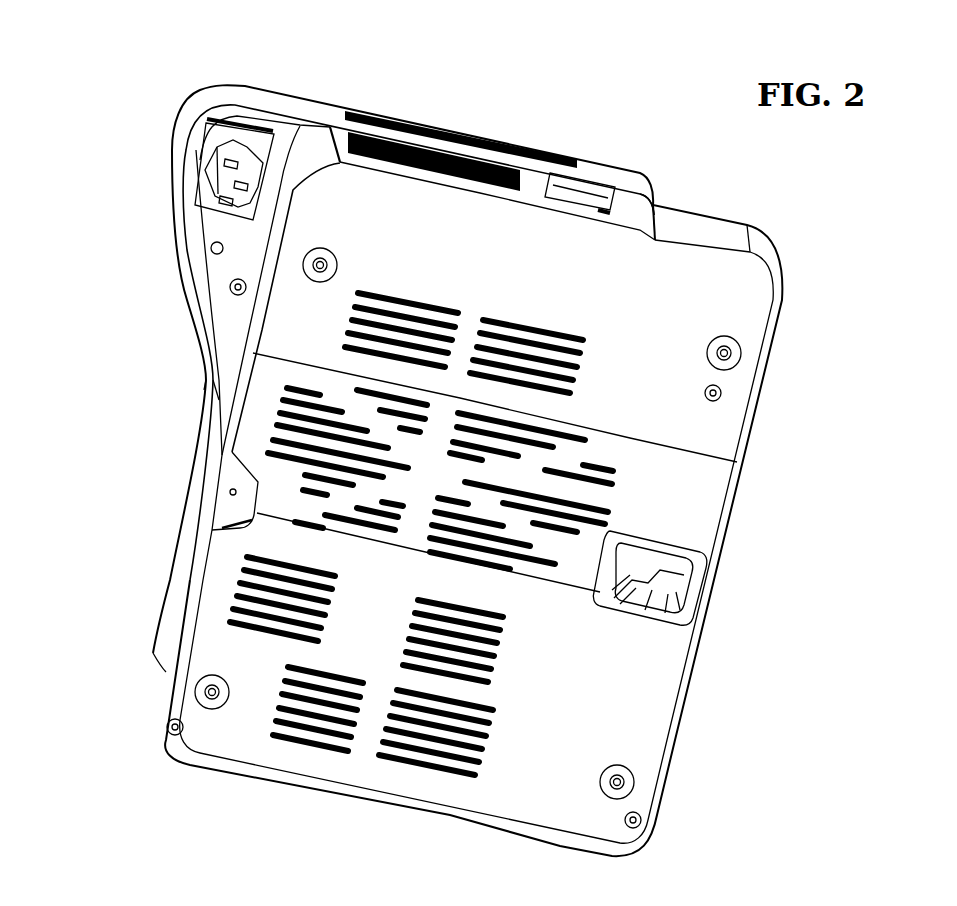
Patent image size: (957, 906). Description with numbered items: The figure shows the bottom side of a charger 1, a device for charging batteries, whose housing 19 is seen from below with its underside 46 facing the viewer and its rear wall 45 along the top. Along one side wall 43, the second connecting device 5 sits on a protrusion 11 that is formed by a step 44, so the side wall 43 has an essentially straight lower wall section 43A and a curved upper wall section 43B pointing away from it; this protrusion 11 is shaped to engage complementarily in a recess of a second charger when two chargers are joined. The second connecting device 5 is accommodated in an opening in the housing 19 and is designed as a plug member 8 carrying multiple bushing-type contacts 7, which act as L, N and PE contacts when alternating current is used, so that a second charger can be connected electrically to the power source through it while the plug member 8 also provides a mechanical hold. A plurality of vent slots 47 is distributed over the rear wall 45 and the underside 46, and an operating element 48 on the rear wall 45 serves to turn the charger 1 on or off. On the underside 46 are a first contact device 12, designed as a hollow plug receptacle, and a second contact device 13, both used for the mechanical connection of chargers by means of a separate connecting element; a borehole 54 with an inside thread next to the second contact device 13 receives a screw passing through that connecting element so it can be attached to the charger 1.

The charger 1 is at (484, 118).
The second connecting device 5 is at (204, 163).
The bushing-type contacts 7 is at (222, 201).
The plug member 8 is at (228, 135).
The protrusion 11 is at (230, 316).
The first contact device 12 is at (702, 576).
The second contact device 13 is at (225, 512).
The housing 19 is at (757, 240).
The side wall 43 is at (155, 657).
The lower wall section 43A is at (233, 405).
The upper wall section 43B is at (205, 383).
The step 44 is at (220, 273).
The rear wall 45 is at (630, 178).
The underside 46 is at (721, 433).
The vent slots 47 is at (533, 148).
The operating element 48 is at (583, 187).
The borehole 54 is at (229, 493).